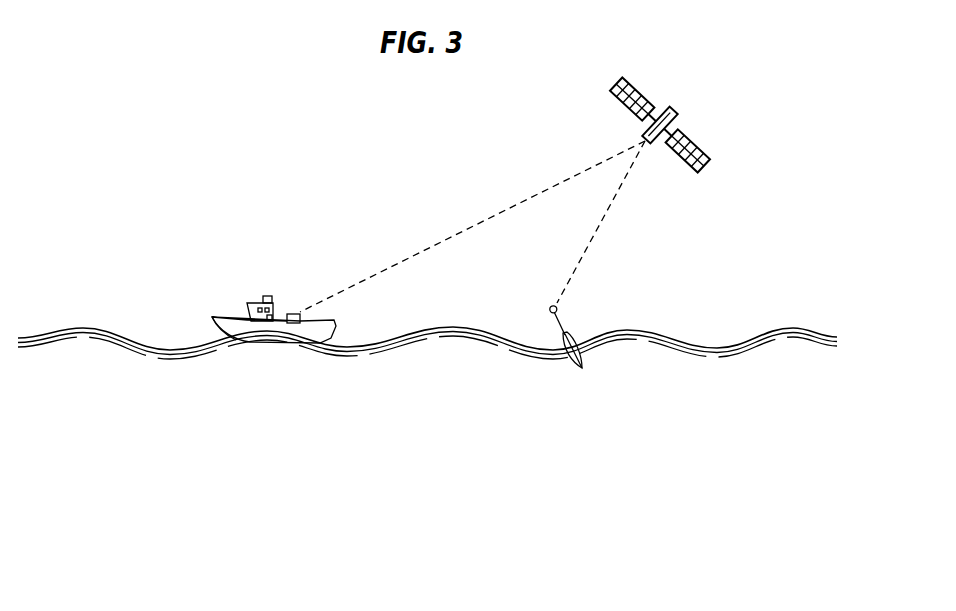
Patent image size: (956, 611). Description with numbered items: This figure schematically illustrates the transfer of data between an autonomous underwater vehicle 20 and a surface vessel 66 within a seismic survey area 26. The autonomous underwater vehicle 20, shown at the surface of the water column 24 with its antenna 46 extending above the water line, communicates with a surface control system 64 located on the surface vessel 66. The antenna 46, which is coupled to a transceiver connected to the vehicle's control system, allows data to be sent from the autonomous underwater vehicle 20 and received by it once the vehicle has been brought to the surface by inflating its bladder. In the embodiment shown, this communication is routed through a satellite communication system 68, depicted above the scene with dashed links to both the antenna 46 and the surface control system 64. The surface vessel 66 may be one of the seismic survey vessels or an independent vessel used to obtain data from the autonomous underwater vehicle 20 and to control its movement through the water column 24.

The satellite communication system 68 is at (664, 88).
The surface vessel 66 is at (269, 293).
The surface control system 64 is at (293, 314).
The autonomous underwater vehicle 20 is at (580, 321).
The antenna 46 is at (557, 323).
The seismic survey area 26 is at (749, 309).
The water column 24 is at (651, 406).